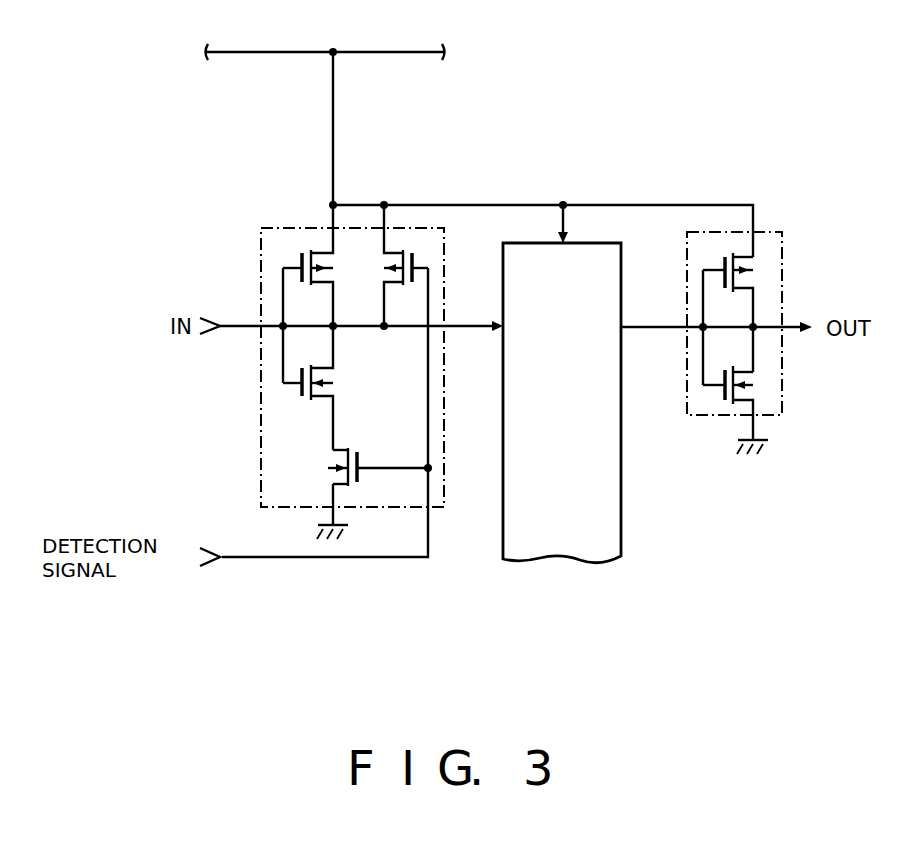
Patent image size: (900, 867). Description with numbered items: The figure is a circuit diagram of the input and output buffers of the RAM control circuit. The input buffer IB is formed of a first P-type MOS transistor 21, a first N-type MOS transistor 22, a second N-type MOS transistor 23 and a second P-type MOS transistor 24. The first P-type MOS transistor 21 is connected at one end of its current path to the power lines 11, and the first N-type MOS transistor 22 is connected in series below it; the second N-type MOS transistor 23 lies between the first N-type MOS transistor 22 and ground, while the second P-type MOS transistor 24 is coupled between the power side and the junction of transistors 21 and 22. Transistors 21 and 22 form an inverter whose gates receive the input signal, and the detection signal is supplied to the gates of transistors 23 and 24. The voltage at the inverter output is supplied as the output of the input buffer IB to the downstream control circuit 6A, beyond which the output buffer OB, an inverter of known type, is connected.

The power lines 11 is at (395, 52).
The input buffer IB is at (309, 226).
The first P-type MOS transistor 21 is at (310, 253).
The first N-type MOS transistor 22 is at (302, 395).
The second N-type MOS transistor 23 is at (328, 468).
The second P-type MOS transistor 24 is at (396, 263).
The control circuit 6A is at (592, 554).
The output buffer OB is at (767, 230).